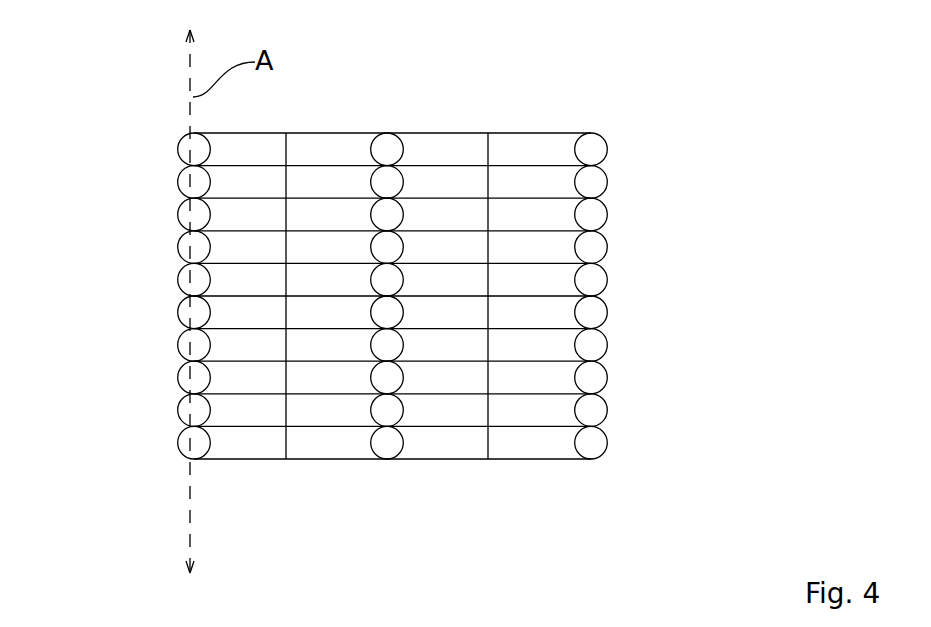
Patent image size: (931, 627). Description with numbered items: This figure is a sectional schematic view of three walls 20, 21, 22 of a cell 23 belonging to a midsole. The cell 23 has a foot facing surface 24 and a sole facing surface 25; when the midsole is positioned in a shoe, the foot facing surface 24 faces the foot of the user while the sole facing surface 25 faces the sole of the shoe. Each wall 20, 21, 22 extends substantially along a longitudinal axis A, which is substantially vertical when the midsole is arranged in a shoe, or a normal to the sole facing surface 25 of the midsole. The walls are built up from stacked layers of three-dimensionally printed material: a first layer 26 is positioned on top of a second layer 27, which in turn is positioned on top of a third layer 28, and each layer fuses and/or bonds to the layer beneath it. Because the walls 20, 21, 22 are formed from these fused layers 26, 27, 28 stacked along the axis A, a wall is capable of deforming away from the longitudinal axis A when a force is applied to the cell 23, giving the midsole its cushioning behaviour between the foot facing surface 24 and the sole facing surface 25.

The wall 20 is at (192, 319).
The wall 21 is at (392, 218).
The wall 22 is at (588, 278).
The cell 23 is at (310, 386).
The foot facing surface 24 is at (440, 133).
The sole facing surface 25 is at (520, 462).
The first layer 26 is at (192, 150).
The second layer 27 is at (192, 182).
The third layer 28 is at (192, 217).